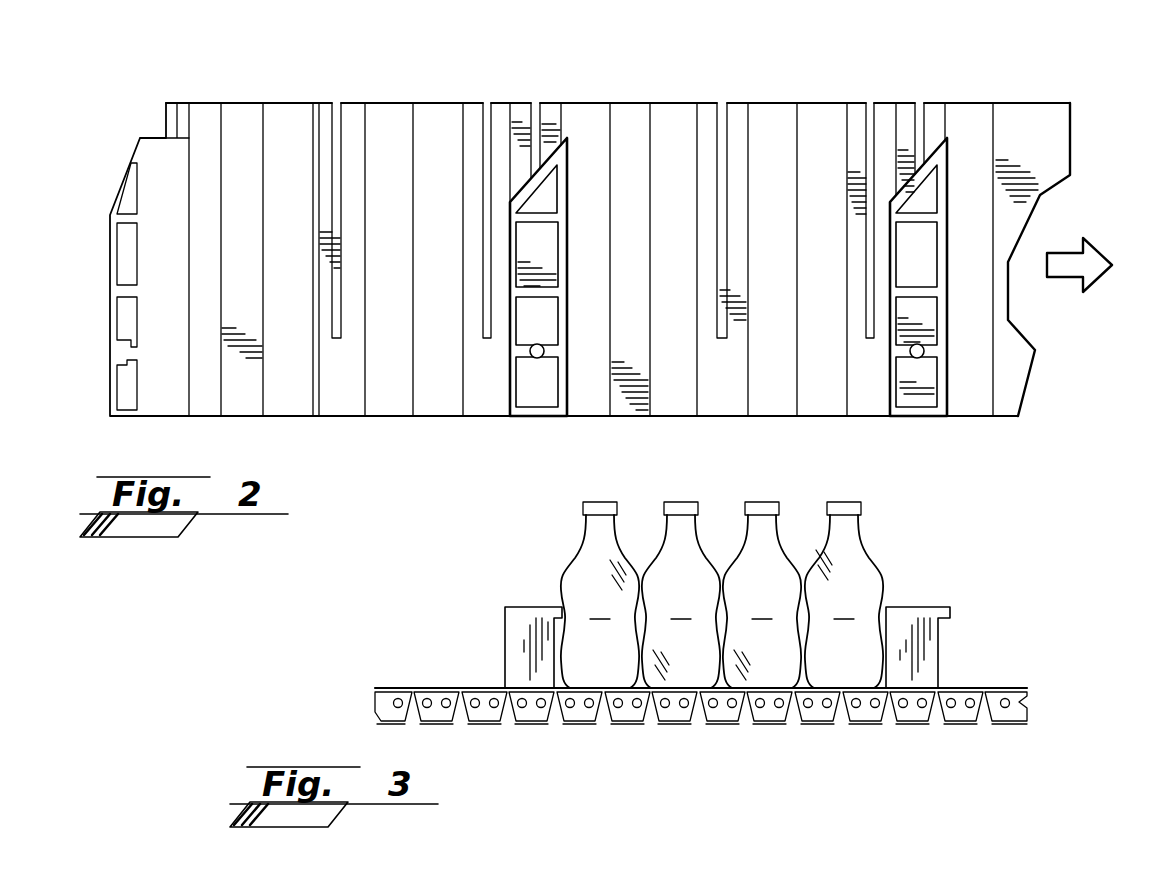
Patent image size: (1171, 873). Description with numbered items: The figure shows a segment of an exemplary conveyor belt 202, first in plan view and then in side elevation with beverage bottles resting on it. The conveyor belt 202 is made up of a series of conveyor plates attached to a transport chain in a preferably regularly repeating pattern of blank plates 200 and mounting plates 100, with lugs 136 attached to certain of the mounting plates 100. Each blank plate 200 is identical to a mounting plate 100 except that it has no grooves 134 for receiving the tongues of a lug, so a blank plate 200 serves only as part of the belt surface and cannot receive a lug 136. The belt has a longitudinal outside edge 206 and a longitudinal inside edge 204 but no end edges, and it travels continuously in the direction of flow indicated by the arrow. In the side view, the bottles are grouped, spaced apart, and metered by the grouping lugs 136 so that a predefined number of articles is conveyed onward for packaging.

In FIG. 2, the mounting plate 100 is at (350, 103).
In FIG. 3, the mounting plate 100 is at (520, 728).
In FIG. 2, the groove 134 is at (334, 340).
In FIG. 2, the lug 136 is at (556, 416).
In FIG. 3, the lug 136 is at (515, 655).
In FIG. 2, the blank plate 200 is at (165, 93).
In FIG. 3, the blank plate 200 is at (597, 728).
In FIG. 2, the conveyor belt 202 is at (1048, 73).
In FIG. 3, the conveyor belt 202 is at (1080, 678).
In FIG. 2, the longitudinal inside edge 204 is at (624, 434).
In FIG. 2, the longitudinal outside edge 206 is at (318, 98).